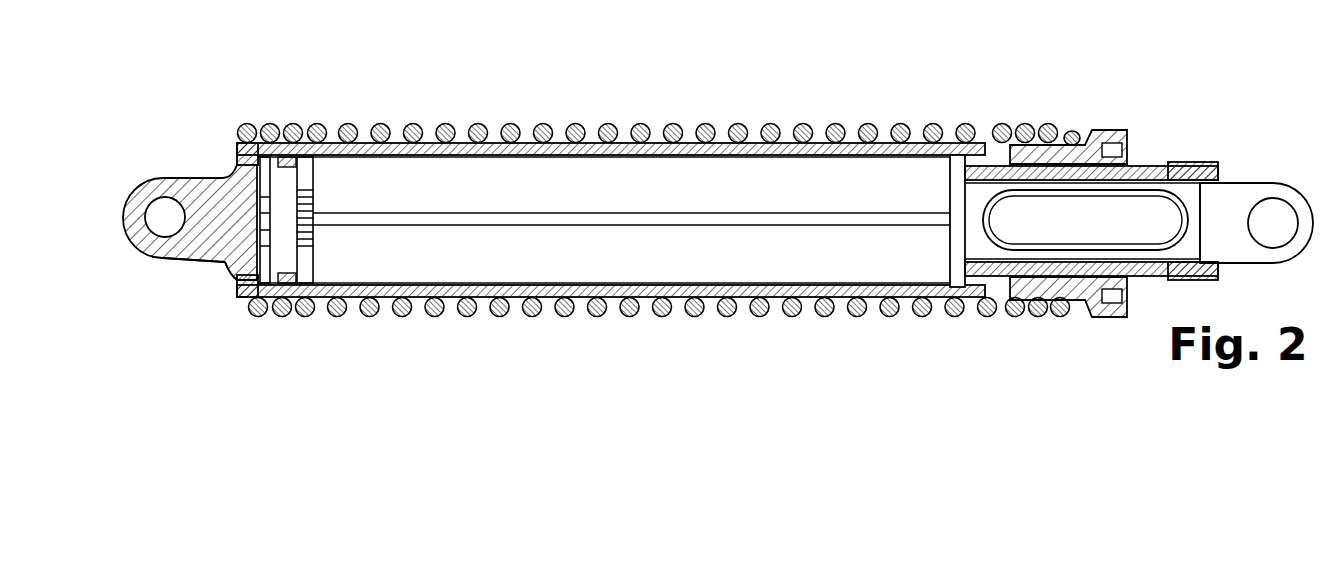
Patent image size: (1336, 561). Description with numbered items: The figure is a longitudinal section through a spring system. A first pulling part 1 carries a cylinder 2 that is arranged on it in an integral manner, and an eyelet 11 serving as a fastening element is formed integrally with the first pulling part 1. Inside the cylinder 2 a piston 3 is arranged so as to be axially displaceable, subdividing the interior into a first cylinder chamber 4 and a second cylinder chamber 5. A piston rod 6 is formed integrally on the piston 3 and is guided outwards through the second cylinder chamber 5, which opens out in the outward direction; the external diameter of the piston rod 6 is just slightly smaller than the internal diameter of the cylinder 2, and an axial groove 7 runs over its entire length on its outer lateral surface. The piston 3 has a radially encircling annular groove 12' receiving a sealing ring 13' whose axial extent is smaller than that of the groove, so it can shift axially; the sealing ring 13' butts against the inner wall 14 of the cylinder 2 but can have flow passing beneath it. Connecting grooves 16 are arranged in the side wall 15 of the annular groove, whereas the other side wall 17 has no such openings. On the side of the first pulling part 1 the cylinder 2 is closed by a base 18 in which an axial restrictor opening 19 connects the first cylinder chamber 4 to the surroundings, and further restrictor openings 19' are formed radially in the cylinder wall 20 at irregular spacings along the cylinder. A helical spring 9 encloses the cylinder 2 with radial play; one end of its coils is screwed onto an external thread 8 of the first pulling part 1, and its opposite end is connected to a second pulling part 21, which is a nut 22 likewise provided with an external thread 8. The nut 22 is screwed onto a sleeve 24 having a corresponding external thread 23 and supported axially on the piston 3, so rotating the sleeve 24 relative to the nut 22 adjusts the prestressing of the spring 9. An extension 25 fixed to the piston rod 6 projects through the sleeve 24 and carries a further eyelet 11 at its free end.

The first pulling part 1 is at (190, 226).
The cylinder 2 is at (593, 277).
The piston 3 is at (314, 222).
The first cylinder chamber 4 is at (235, 290).
The second cylinder chamber 5 is at (952, 145).
The piston rod 6 is at (611, 222).
The axial groove 7 is at (818, 220).
The external thread 8 is at (1027, 134).
The helical spring 9 is at (565, 318).
The eyelet 11 is at (163, 212).
The annular groove 12' is at (269, 166).
The sealing ring 13' is at (300, 94).
The inner wall 14 is at (683, 165).
The side wall 15 is at (248, 294).
The connecting grooves 16 is at (284, 316).
The other side wall 17 is at (305, 316).
The base 18 is at (228, 272).
The axial restrictor opening 19 is at (623, 222).
The further restrictor openings 19' is at (662, 183).
The cylinder wall 20 is at (743, 296).
The second pulling part 21 is at (1077, 171).
The nut 22 is at (1110, 130).
The external thread 23 is at (1142, 165).
The sleeve 24 is at (1195, 162).
The extension 25 is at (1225, 195).